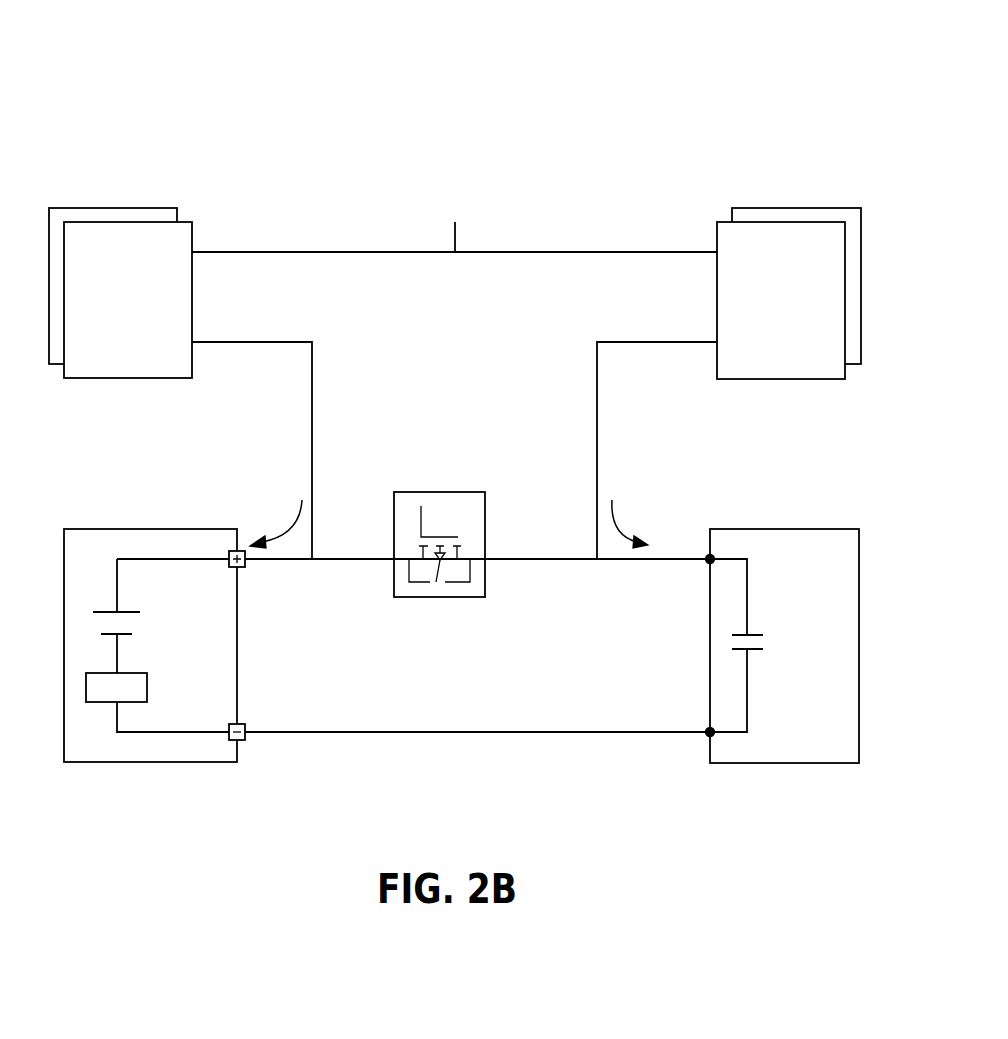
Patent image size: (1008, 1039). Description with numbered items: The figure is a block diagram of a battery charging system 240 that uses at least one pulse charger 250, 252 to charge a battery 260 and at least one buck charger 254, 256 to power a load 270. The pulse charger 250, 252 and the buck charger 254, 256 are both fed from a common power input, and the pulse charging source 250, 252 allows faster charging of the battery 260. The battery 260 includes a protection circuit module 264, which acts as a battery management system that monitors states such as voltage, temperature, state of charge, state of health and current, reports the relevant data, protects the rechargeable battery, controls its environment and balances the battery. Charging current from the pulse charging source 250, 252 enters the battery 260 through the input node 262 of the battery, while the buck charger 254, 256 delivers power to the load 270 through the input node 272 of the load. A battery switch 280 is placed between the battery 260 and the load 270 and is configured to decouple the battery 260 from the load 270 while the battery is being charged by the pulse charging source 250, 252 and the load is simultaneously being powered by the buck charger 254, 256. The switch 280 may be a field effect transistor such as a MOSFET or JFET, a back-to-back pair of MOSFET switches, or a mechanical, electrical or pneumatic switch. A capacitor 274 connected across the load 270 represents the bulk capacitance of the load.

The battery charging system 240 is at (318, 85).
The pulse charger 250 is at (154, 222).
The pulse charger 252 is at (113, 208).
The buck charger 254 is at (752, 222).
The buck charger 256 is at (795, 208).
The battery 260 is at (201, 621).
The input node 262 is at (245, 568).
The protection circuit module (PCM) 264 is at (137, 673).
The load 270 is at (735, 643).
The input node 272 is at (710, 559).
The capacitor 274 is at (761, 645).
The battery switch 280 is at (440, 492).